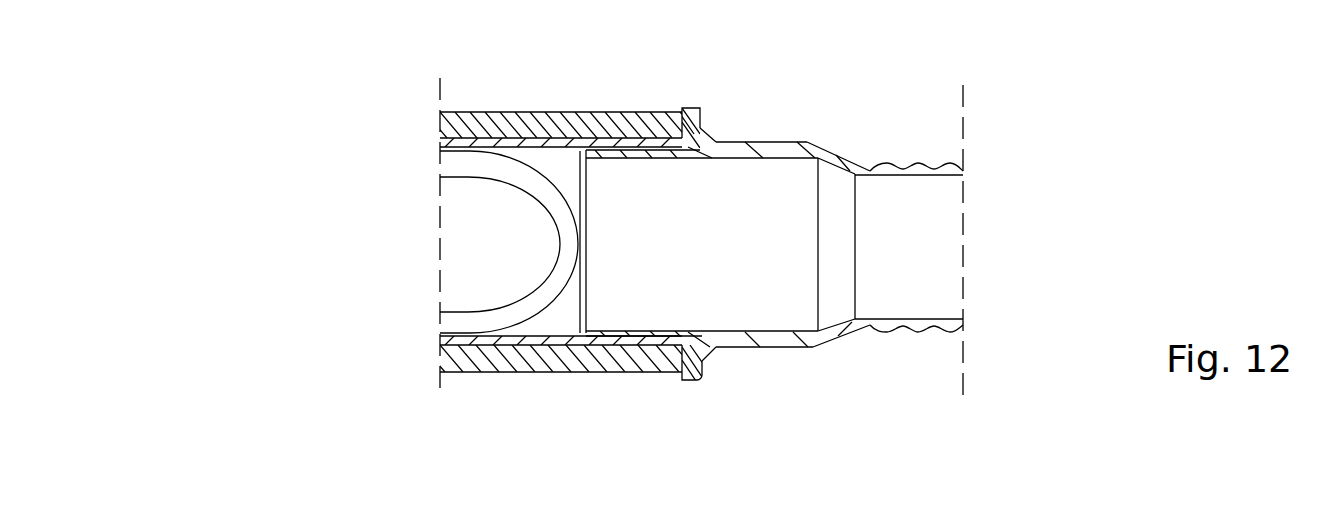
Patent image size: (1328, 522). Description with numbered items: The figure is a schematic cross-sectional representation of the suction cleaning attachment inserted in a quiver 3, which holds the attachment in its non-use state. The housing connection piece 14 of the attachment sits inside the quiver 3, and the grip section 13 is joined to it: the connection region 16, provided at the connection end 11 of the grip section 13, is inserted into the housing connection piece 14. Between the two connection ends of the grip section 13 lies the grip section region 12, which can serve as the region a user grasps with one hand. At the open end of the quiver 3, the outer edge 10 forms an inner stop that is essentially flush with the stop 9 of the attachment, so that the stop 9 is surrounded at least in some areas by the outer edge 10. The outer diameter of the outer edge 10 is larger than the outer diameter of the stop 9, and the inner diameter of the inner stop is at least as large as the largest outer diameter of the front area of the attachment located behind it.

The quiver 3 is at (500, 112).
The housing connection piece 14 is at (555, 138).
The connection region 16 is at (635, 138).
The stop 9 is at (697, 127).
The outer edge 10 is at (682, 108).
The connection end 11 is at (765, 142).
The grip section 13 is at (834, 104).
The grip section region 12 is at (921, 167).